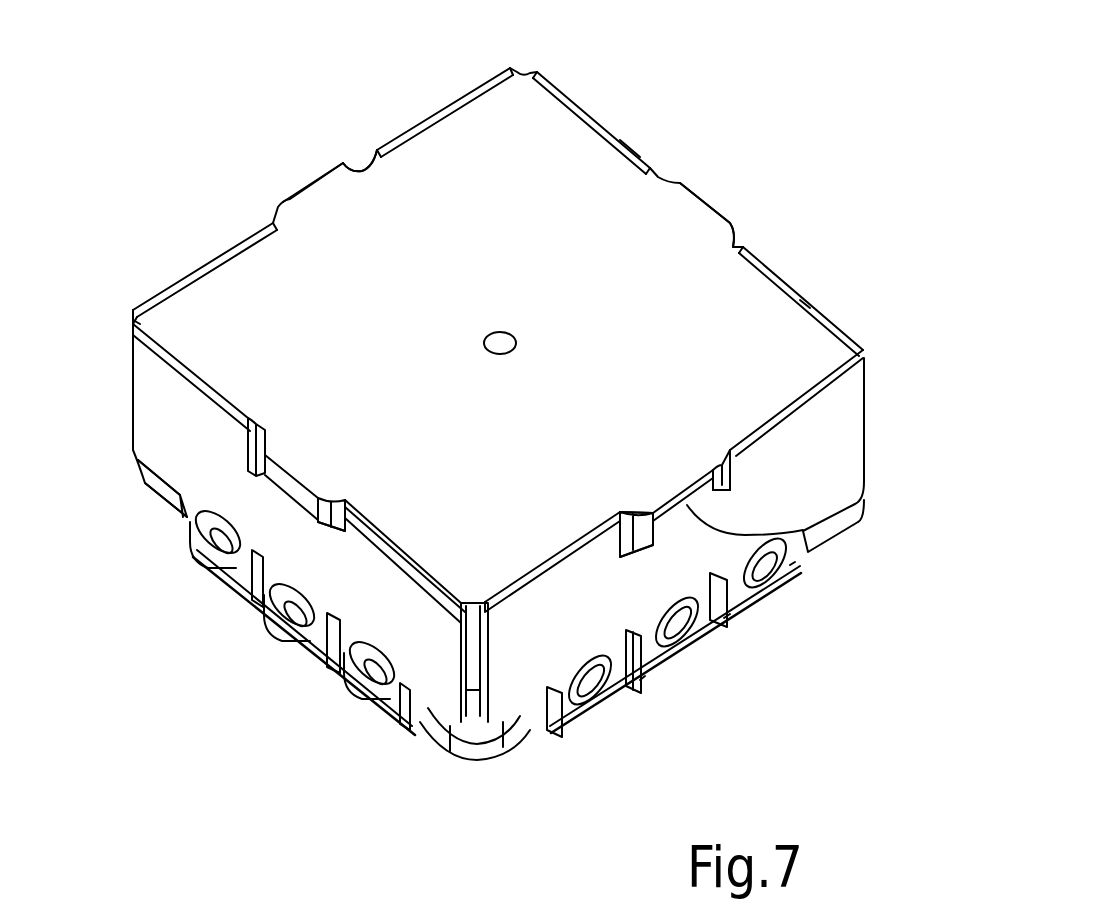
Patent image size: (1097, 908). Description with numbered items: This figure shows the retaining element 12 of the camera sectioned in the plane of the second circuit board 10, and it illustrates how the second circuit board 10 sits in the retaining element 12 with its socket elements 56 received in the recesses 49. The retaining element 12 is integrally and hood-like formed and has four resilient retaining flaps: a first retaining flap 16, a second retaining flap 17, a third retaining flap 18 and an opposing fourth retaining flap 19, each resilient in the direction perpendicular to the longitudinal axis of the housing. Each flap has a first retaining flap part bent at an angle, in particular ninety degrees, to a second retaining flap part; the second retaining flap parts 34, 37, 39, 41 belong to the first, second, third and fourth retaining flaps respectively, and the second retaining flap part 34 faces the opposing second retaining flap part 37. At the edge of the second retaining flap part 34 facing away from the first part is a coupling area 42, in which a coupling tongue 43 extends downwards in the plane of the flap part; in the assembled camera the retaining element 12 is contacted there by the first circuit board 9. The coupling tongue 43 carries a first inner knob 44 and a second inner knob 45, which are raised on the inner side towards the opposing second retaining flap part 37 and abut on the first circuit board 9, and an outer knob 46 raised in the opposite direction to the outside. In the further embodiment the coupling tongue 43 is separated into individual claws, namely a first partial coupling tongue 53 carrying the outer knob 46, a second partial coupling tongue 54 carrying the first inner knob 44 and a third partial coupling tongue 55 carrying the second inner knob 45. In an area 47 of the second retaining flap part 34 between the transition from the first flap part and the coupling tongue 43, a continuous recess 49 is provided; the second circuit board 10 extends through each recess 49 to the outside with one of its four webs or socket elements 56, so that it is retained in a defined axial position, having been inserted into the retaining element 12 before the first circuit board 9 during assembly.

The first circuit board 9 is at (433, 727).
The second circuit board 10 is at (505, 443).
The retaining element 12 is at (614, 126).
The first retaining flap 16 is at (479, 692).
The second retaining flap 17 is at (214, 249).
The third retaining flap 18 is at (128, 390).
The fourth retaining flap 19 is at (641, 147).
The second retaining flap part 34 is at (606, 700).
The second retaining flap part 37 is at (168, 290).
The second retaining flap part 39 is at (185, 463).
The second retaining flap part 41 is at (818, 315).
The coupling area 42 is at (548, 700).
The coupling tongue 43 is at (554, 744).
The first inner knob 44 is at (560, 645).
The second inner knob 45 is at (777, 590).
The outer knob 46 is at (684, 630).
The area 47 is at (872, 383).
The recess 49 is at (360, 158).
The first partial coupling tongue 53 is at (724, 618).
The second partial coupling tongue 54 is at (640, 680).
The third partial coupling tongue 55 is at (793, 567).
The socket element 56 is at (316, 185).